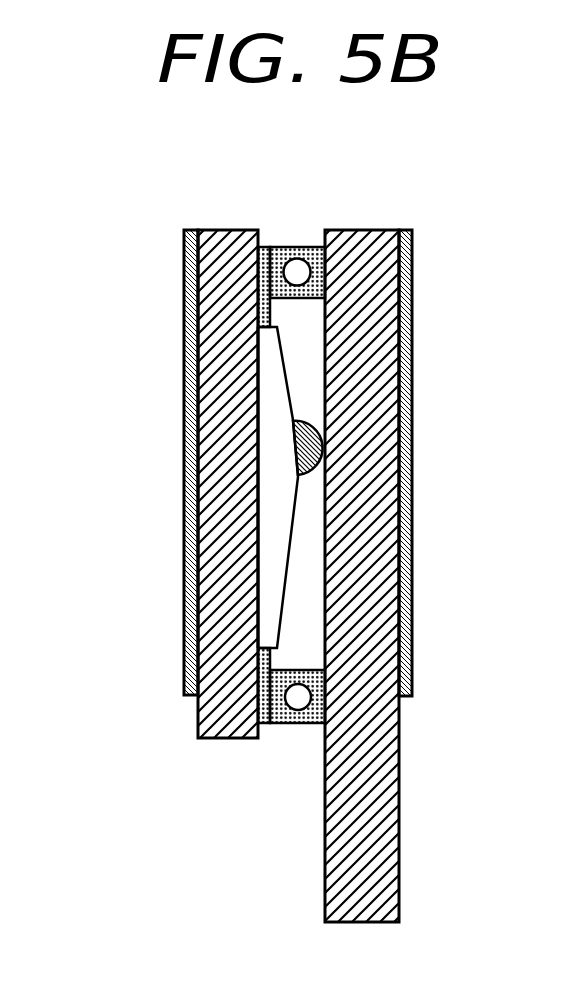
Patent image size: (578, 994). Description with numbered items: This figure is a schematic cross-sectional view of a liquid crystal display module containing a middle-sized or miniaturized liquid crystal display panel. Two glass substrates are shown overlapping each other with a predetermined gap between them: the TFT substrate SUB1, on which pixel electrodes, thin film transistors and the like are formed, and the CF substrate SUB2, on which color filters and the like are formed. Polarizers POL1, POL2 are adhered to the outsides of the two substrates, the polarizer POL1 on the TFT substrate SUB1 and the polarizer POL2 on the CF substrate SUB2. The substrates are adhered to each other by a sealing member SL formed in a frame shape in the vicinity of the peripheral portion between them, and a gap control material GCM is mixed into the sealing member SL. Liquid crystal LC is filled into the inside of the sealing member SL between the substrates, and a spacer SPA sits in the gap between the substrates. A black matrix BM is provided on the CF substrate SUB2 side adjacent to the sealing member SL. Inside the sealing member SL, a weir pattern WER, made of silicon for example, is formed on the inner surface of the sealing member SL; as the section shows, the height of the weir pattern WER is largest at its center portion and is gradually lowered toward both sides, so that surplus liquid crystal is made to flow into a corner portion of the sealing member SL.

The sealing member SL is at (257, 248).
The black matrix BM is at (257, 296).
The weir pattern WER is at (258, 447).
The CF substrate SUB2 is at (202, 507).
The polarizer POL2 is at (191, 590).
The TFT substrate SUB1 is at (340, 828).
The polarizer POL1 is at (405, 280).
The spacer SPA is at (320, 427).
The liquid crystal LC is at (302, 527).
The gap control material GCM is at (307, 702).